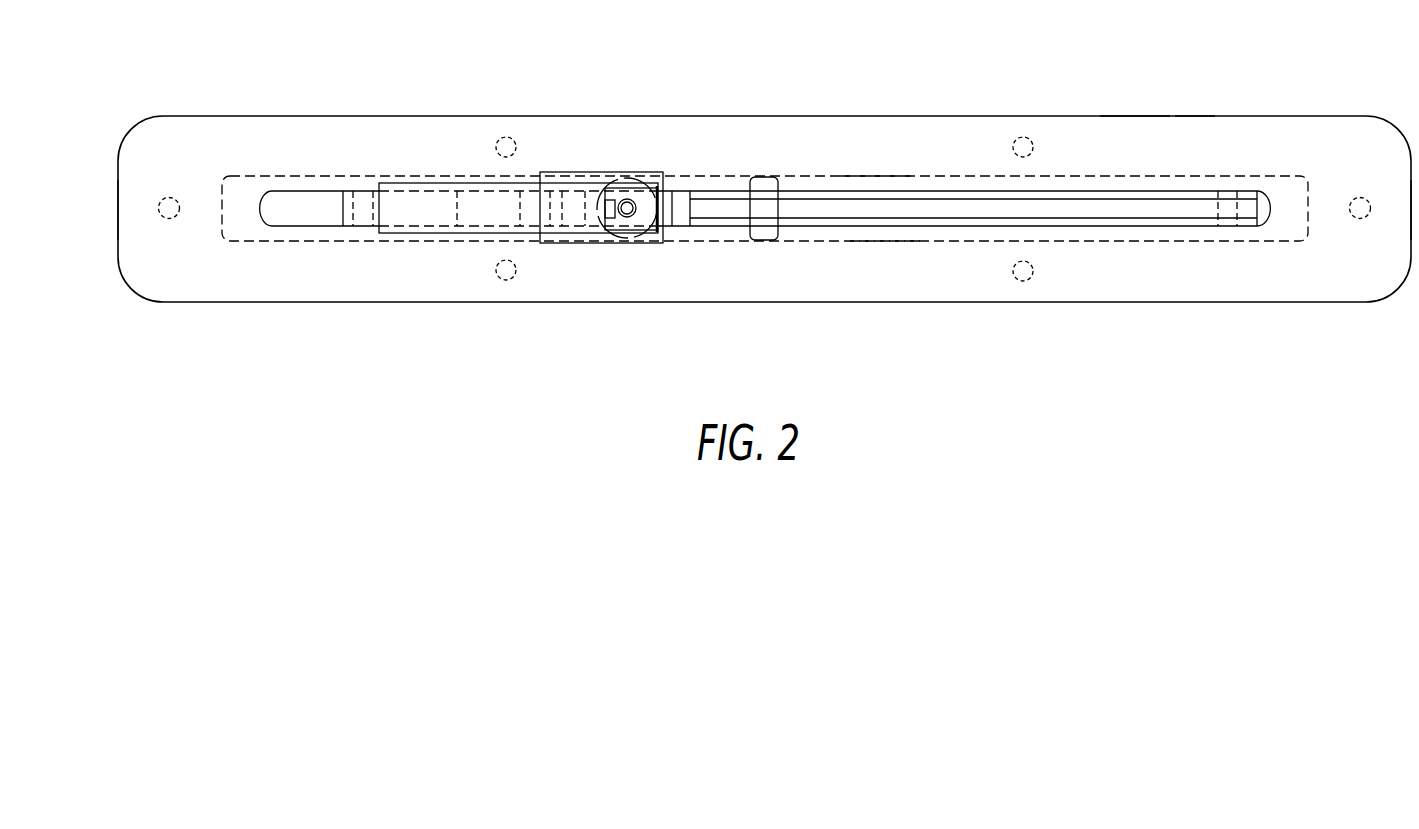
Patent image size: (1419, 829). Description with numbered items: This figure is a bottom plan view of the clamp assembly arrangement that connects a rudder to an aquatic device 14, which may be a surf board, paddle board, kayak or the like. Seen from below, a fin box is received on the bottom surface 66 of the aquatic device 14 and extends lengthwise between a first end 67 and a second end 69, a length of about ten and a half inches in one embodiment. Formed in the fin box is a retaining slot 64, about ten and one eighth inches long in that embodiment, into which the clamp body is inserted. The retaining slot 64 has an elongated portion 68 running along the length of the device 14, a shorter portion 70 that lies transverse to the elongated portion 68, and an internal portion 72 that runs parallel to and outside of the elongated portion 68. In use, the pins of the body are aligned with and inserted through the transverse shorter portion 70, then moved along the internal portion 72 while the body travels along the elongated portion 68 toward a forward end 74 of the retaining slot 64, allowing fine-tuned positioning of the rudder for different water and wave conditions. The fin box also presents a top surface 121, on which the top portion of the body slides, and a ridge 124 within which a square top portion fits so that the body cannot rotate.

The aquatic device 14 is at (1323, 115).
The retaining slot 64 is at (875, 177).
The bottom surface 66 is at (1134, 135).
The first end 67 is at (117, 197).
The elongated portion 68 is at (997, 194).
The second end 69 is at (1411, 197).
The shorter portion 70 is at (772, 177).
The internal portion 72 is at (885, 241).
The forward end 74 is at (222, 195).
The top surface 121 is at (1235, 159).
The ridge 124 is at (1192, 115).